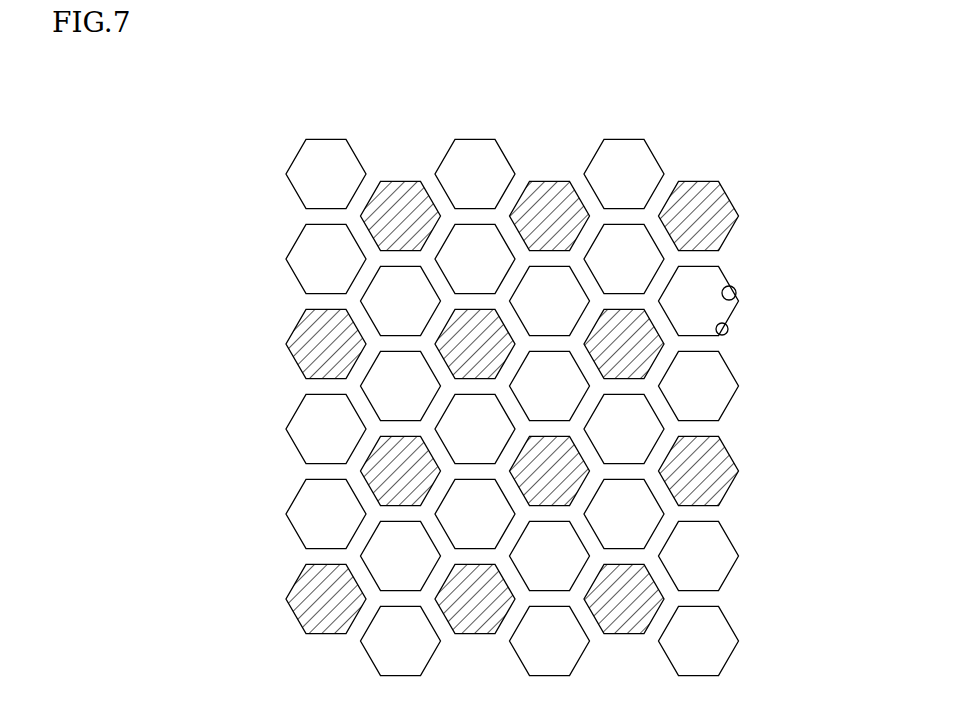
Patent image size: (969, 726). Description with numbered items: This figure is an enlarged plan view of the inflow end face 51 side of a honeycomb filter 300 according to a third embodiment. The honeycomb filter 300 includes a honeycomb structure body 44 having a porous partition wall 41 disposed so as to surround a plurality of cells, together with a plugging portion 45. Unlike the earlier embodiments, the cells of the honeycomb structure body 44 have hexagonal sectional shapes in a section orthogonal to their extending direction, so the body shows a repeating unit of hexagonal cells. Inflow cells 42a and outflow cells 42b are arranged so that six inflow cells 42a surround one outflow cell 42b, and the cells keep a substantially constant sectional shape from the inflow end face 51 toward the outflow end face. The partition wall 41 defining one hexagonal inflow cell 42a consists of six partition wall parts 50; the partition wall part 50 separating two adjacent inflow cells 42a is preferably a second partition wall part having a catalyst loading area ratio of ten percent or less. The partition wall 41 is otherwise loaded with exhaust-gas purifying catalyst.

The honeycomb filter 300 is at (592, 358).
The honeycomb structure body 44 is at (592, 380).
The inflow cell 42a is at (695, 294).
The outflow cell 42b is at (703, 467).
The plugging portion 45 is at (539, 207).
The partition wall 41 is at (618, 218).
The partition wall part 50 is at (735, 305).
The inflow end face 51 is at (351, 126).